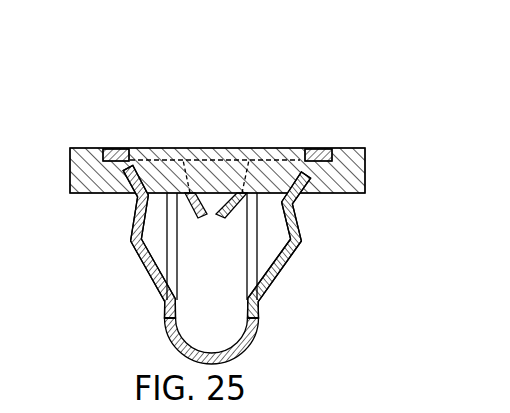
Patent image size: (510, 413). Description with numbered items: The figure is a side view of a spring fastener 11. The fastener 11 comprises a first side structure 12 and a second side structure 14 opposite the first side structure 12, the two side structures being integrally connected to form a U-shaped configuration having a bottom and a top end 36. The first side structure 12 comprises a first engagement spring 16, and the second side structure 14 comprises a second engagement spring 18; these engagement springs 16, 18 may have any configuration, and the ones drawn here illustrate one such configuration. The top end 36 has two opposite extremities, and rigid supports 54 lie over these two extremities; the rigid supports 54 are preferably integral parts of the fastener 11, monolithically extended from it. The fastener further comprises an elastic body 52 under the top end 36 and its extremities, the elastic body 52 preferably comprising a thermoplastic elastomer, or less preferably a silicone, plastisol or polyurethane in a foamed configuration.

The fastener 11 is at (126, 90).
The first side structure 12 is at (108, 260).
The second side structure 14 is at (298, 279).
The first engagement spring 16 is at (148, 285).
The second engagement spring 18 is at (270, 287).
The top end 36 is at (133, 148).
The elastic body 52 is at (92, 193).
The rigid supports 54 is at (188, 148).